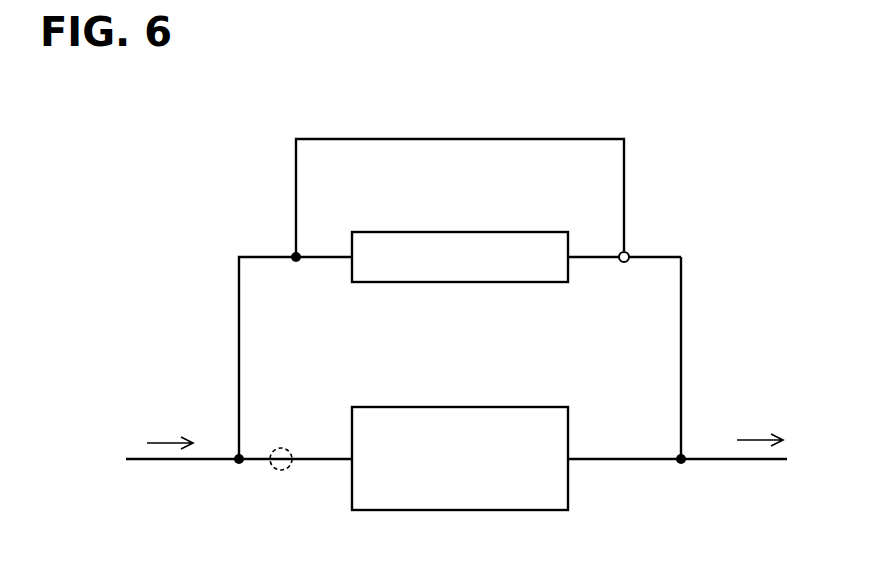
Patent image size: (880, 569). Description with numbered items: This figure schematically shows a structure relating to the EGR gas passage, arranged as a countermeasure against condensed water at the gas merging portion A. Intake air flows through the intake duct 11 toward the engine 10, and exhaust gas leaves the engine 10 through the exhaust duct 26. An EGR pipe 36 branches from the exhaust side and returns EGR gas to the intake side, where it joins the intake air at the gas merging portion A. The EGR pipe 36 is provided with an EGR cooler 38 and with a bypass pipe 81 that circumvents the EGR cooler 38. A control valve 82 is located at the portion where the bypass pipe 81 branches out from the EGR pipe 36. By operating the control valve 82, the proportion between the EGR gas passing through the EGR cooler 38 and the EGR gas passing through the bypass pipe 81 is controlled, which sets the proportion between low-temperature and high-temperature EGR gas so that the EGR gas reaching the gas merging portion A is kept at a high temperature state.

The bypass pipe 81 is at (603, 137).
The EGR cooler 38 is at (544, 231).
The control valve 82 is at (629, 254).
The EGR pipe 36 is at (683, 284).
The engine 10 is at (545, 405).
The intake duct 11 is at (141, 462).
The exhaust duct 26 is at (768, 462).
The gas merging portion A is at (292, 446).